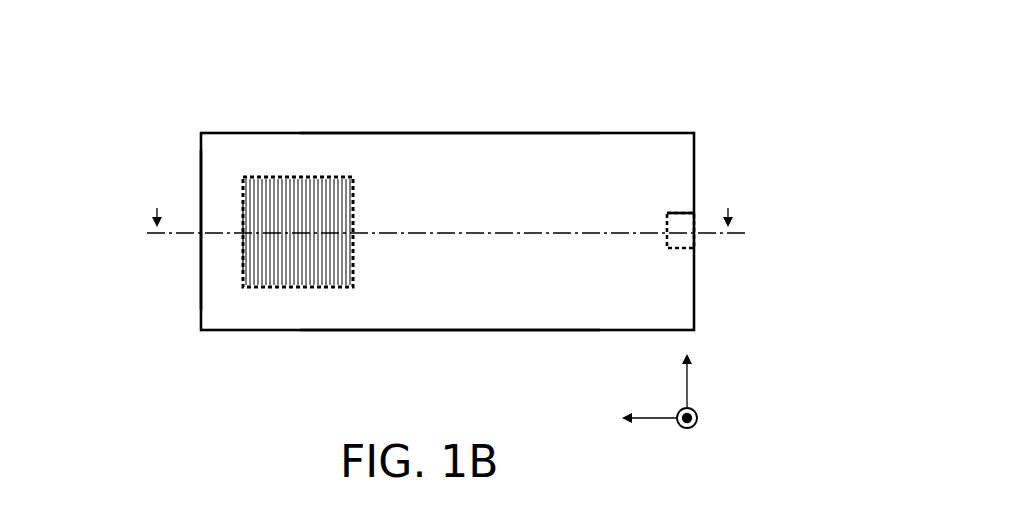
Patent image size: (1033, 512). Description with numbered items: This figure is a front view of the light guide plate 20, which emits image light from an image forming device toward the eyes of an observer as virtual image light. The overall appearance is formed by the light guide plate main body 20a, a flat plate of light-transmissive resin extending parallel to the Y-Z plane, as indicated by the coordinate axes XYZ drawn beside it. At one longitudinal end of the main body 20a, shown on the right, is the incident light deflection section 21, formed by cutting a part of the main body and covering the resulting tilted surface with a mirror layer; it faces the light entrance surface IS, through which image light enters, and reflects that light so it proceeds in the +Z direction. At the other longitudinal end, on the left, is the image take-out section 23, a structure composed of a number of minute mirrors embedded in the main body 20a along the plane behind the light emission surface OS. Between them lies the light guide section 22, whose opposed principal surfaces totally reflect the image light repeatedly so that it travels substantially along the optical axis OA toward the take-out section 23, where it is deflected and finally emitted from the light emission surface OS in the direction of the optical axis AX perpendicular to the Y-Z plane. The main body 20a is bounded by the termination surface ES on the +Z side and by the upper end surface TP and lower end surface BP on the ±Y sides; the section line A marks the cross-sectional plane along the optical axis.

The light guide plate 20 is at (566, 86).
The light guide plate main body 20a is at (505, 133).
The incident light deflection section 21 is at (683, 210).
The light guide section 22 is at (447, 143).
The image take-out section 23 is at (302, 176).
The upper end surface TP is at (393, 133).
The light entrance surface IS is at (676, 212).
The termination surface ES is at (201, 177).
The light emission surface OS is at (247, 272).
The optical axis AX is at (290, 233).
The optical axis OA is at (488, 234).
The lower end surface BP is at (386, 330).
The section line A- A is at (442, 235).
The coordinate axes XYZ is at (663, 392).